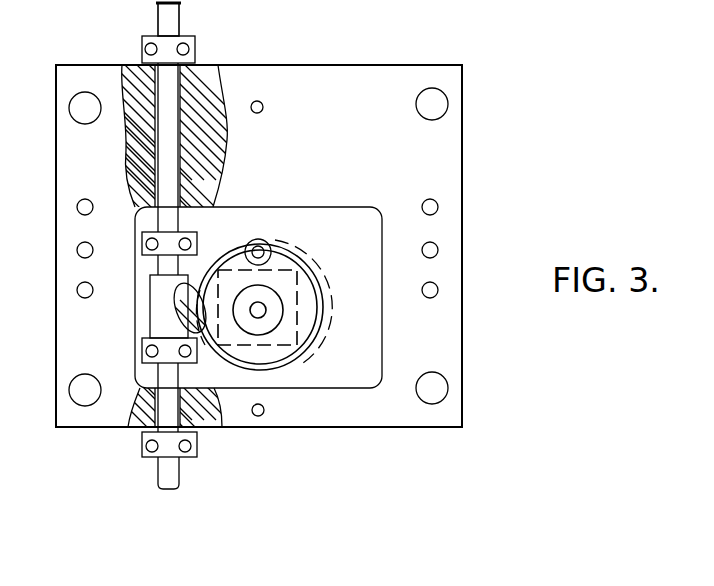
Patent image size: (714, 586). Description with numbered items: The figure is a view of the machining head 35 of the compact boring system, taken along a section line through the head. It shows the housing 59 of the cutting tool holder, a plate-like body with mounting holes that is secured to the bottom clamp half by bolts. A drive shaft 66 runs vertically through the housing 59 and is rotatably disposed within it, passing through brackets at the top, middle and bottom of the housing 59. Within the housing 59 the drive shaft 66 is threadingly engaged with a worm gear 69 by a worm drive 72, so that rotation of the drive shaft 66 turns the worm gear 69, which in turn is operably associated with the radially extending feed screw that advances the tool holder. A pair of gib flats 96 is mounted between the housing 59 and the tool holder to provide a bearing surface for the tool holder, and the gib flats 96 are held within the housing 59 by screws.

The machining head 35 is at (468, 157).
The housing 59 is at (434, 64).
The drive shaft 66 is at (158, 468).
The worm drive 72 is at (155, 305).
The worm gear 69 is at (283, 370).
The gib flats 96 is at (280, 352).